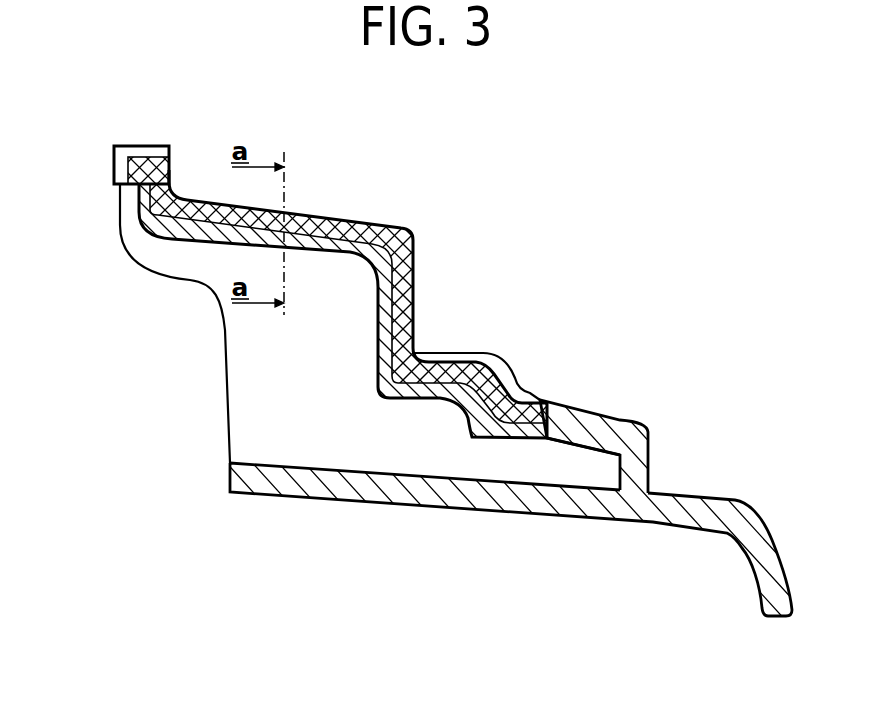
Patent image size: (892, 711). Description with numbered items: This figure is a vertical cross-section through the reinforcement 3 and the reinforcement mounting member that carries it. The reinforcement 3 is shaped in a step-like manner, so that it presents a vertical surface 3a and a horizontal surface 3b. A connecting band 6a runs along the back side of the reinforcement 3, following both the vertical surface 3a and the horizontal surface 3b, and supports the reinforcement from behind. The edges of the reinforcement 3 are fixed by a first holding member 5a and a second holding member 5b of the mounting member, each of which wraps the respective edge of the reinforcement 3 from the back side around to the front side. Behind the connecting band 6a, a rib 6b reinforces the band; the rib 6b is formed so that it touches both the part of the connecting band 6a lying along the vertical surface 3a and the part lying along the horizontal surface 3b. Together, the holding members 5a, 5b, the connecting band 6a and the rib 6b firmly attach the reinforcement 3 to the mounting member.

The reinforcement 3 is at (413, 306).
The vertical surface 3a is at (172, 182).
The horizontal surface 3b is at (147, 157).
The first holding member 5a is at (528, 394).
The second holding member 5b is at (114, 168).
The connecting band 6a is at (423, 420).
The rib 6b is at (240, 372).